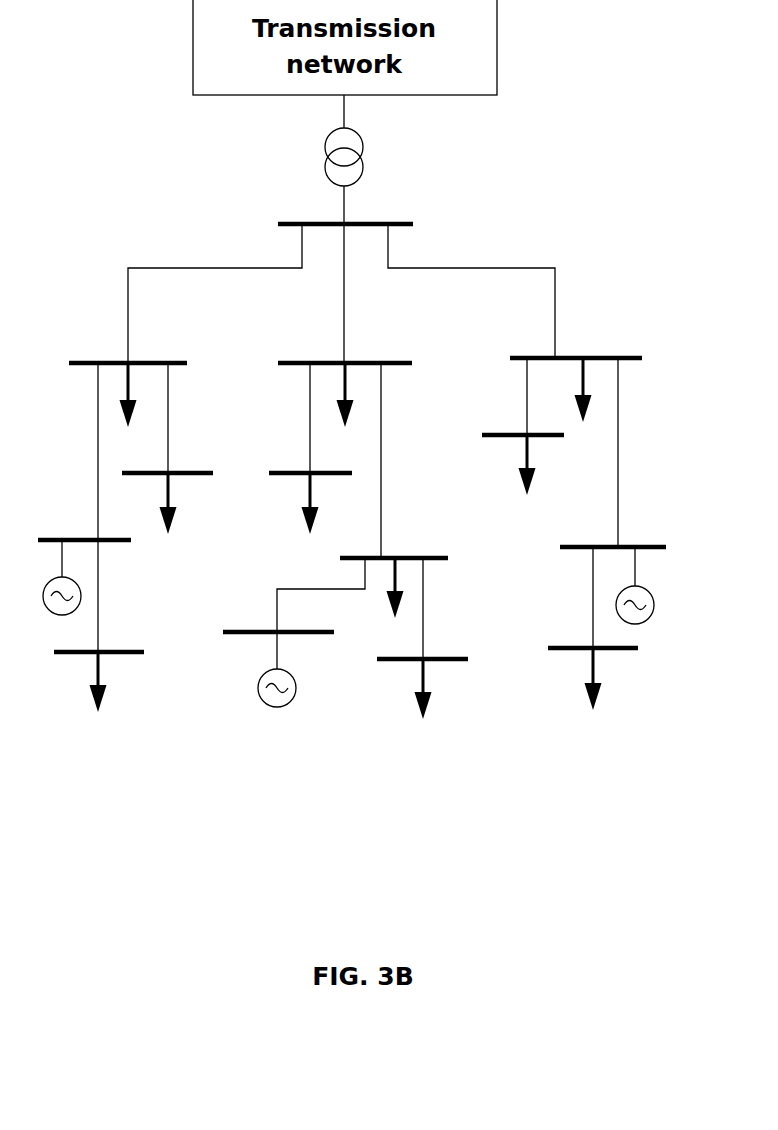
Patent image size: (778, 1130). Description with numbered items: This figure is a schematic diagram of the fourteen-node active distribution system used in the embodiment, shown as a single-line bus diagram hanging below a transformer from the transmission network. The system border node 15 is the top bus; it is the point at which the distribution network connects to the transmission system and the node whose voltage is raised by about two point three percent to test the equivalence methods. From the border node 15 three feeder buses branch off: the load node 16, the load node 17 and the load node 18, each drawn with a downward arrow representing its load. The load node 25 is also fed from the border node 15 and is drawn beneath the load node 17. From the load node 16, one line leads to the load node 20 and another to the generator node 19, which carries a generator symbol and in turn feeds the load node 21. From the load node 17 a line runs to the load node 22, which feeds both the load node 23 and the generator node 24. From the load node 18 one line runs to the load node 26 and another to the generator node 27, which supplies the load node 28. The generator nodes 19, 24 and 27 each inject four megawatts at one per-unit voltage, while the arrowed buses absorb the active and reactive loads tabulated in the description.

The system border node 15 is at (348, 206).
The load node 16 is at (128, 374).
The load node 17 is at (345, 374).
The load node 18 is at (576, 372).
The generator node 19 is at (84, 560).
The load node 20 is at (170, 485).
The load node 21 is at (103, 662).
The load node 22 is at (394, 573).
The load node 23 is at (422, 669).
The generator node 24 is at (278, 653).
The load node 25 is at (301, 485).
The load node 26 is at (515, 448).
The generator node 27 is at (619, 572).
The load node 28 is at (593, 658).